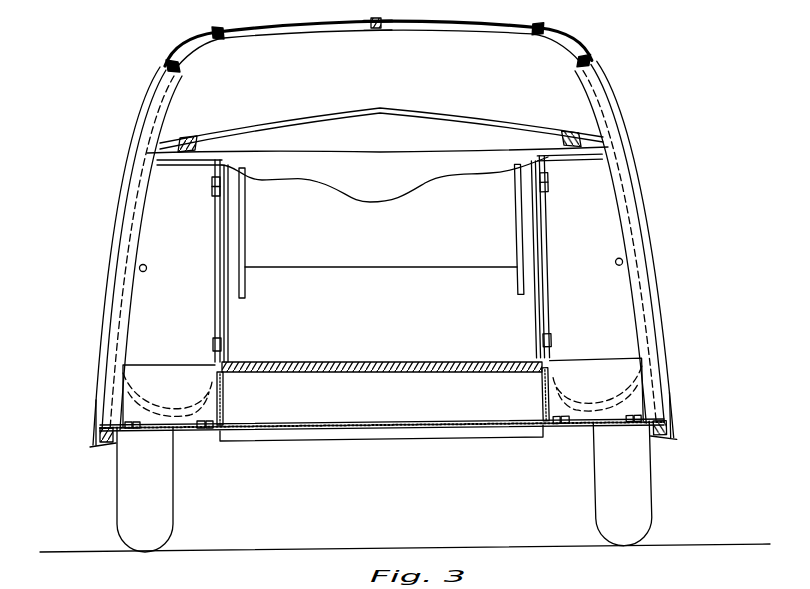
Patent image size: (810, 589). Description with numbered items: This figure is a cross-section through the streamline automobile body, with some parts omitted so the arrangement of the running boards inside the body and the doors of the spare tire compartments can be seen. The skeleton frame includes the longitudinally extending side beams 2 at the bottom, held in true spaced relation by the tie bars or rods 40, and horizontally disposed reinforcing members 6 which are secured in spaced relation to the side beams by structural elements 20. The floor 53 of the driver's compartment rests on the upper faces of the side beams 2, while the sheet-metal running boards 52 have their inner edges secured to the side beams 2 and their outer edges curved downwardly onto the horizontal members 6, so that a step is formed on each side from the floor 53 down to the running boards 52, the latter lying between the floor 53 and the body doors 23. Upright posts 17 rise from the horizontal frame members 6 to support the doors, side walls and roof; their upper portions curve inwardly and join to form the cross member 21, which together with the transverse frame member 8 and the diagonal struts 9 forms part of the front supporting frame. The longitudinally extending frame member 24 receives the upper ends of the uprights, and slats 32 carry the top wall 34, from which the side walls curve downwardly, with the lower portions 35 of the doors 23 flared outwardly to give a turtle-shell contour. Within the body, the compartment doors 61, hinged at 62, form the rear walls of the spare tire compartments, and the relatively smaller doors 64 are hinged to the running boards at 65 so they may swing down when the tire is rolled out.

The side beam 2 is at (225, 402).
The horizontal reinforcing member 6 is at (108, 443).
The transverse frame member 8 is at (395, 107).
The diagonal strut 9 is at (194, 141).
The upright post 17 is at (163, 98).
The structural element 20 is at (192, 400).
The cross member 21 is at (324, 33).
The door 23 is at (107, 287).
The longitudinally extending frame member 24 is at (181, 65).
The slat 32 is at (222, 37).
The top wall 34 is at (433, 27).
The lower door portion 35 is at (95, 408).
The tie bar 40 is at (407, 432).
The running board 52 is at (180, 436).
The floor 53 is at (359, 362).
The door 61 is at (160, 237).
The hinge 62 is at (219, 195).
The smaller door 64 is at (138, 383).
The hinge 65 is at (180, 421).